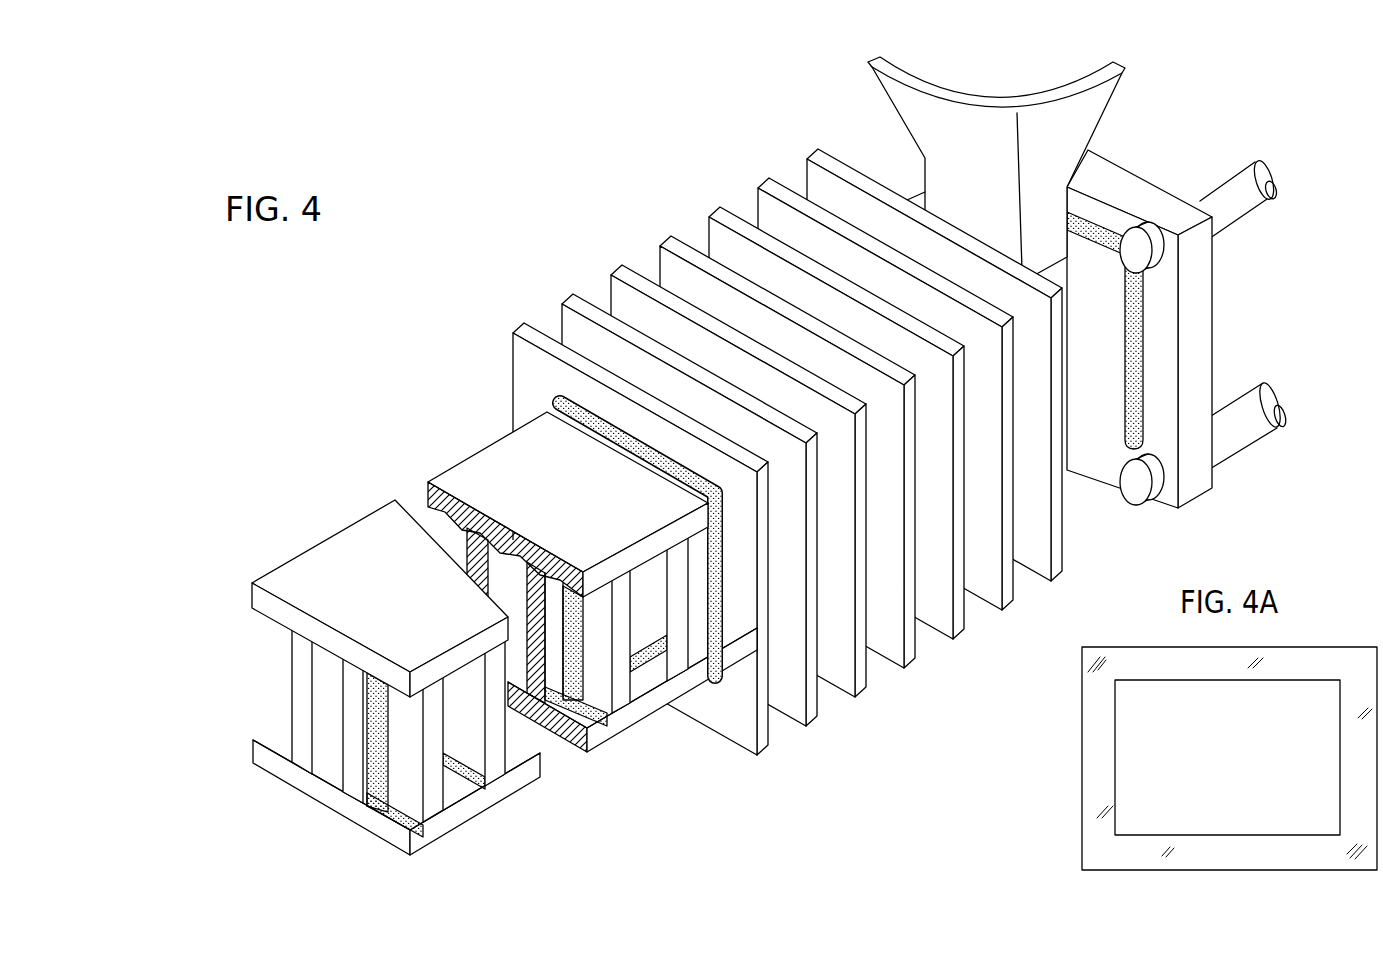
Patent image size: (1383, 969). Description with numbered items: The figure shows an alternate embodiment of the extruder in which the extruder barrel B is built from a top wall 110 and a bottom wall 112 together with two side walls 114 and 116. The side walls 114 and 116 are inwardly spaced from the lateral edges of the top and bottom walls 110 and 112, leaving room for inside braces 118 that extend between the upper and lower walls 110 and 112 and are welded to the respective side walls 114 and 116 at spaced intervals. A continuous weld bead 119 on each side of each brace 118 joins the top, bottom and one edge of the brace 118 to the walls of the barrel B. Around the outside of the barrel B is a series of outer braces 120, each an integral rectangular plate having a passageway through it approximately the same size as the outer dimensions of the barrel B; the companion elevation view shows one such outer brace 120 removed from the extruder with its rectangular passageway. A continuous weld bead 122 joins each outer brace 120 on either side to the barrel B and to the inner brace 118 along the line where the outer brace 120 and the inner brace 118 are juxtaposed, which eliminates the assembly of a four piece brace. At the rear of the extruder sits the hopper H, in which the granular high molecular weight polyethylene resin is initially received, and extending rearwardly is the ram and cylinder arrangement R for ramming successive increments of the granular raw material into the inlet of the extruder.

In FIG. 4, the top wall 110 is at (262, 603).
In FIG. 4, the bottom wall 112 is at (280, 770).
In FIG. 4, the side wall 114 is at (302, 680).
In FIG. 4, the side wall 116 is at (353, 788).
In FIG. 4, the inside brace 118 is at (433, 800).
In FIG. 4, the weld bead 119 is at (368, 795).
In FIG. 4, the outer brace 120 is at (796, 707).
In FIG. 4A, the outer brace 120 is at (1093, 752).
In FIG. 4, the weld bead 122 is at (610, 438).
In FIG. 4, the hopper H is at (1097, 102).
In FIG. 4, the ram and cylinder arrangement R is at (1148, 192).
In FIG. 4, the extruder barrel B is at (455, 462).